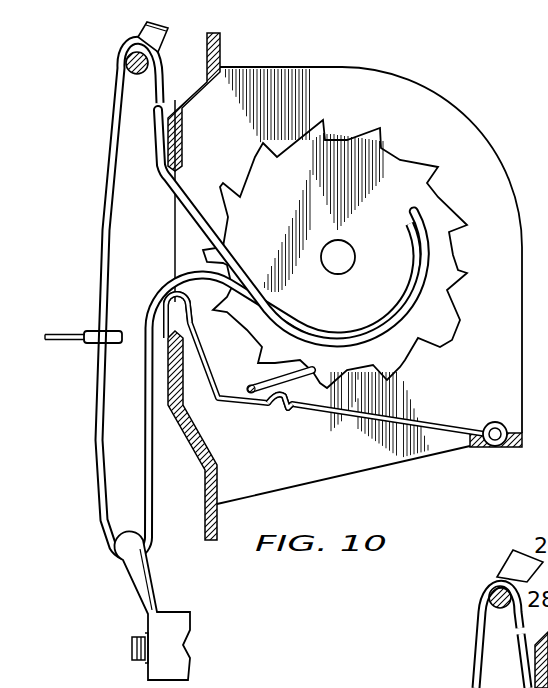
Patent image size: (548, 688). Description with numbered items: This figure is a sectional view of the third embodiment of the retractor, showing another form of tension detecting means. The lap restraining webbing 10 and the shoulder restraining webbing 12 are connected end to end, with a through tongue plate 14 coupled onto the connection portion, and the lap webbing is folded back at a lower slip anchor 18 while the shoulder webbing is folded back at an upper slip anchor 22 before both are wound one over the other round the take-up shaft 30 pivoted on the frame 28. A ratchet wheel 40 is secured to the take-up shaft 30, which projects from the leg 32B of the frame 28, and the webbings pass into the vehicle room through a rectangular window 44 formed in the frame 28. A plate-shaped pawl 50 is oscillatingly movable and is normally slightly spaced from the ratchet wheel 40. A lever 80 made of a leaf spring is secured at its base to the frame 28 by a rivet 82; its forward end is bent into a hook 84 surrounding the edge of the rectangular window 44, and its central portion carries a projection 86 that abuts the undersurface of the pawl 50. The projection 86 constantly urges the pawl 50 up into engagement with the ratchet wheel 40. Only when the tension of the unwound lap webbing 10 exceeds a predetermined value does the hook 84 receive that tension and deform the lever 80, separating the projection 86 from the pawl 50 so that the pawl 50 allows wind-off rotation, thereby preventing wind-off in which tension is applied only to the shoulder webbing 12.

The lap restraining webbing 10 is at (156, 465).
The shoulder restraining webbing 12 is at (187, 195).
The through tongue plate 14 is at (67, 331).
The slip anchor 18 is at (130, 582).
The slip anchor 22 is at (139, 36).
The frame 28 is at (188, 97).
The take-up shaft 30 is at (351, 247).
The leg of the frame 32B is at (469, 116).
The ratchet wheel 40 is at (396, 370).
The rectangular window 44 is at (173, 252).
The pawl 50 is at (262, 385).
The lever 80 is at (326, 412).
The rivet 82 is at (492, 421).
The hook 84 is at (192, 311).
The projection 86 is at (290, 408).